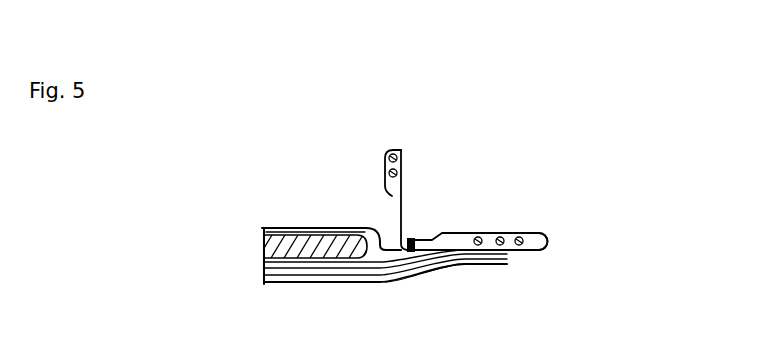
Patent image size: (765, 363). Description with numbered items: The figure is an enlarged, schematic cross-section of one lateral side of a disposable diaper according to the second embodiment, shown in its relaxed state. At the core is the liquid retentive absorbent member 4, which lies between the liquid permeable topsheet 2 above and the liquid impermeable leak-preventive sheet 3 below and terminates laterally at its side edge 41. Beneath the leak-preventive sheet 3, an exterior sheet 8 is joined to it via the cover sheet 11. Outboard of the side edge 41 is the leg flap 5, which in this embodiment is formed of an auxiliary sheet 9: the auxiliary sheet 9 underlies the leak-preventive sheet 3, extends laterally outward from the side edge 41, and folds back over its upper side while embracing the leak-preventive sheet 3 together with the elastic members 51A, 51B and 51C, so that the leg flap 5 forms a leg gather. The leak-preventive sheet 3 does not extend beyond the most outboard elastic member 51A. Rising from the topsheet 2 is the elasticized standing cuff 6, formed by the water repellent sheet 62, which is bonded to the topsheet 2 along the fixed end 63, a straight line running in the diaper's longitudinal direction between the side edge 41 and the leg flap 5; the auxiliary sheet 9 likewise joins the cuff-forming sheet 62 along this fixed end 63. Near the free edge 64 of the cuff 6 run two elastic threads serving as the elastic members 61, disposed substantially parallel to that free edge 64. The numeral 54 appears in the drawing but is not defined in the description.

The topsheet 2 is at (333, 228).
The leak-preventive sheet 3 is at (272, 261).
The absorbent member 4 is at (271, 232).
The leg flap 5 is at (521, 245).
The standing cuff 6 is at (369, 161).
The exterior sheet 8 is at (435, 272).
The auxiliary sheet 9 is at (528, 251).
The cover sheet 11 is at (322, 279).
The side edge 41 is at (373, 263).
The elastic member 51A is at (522, 236).
The elastic member 51B is at (500, 236).
The elastic member 51C is at (476, 236).
The plate end 54 is at (550, 238).
The elastic members 61 is at (387, 173).
The water repellent sheet 62 is at (402, 205).
The fixed end 63 is at (415, 238).
The free edge 64 is at (394, 150).